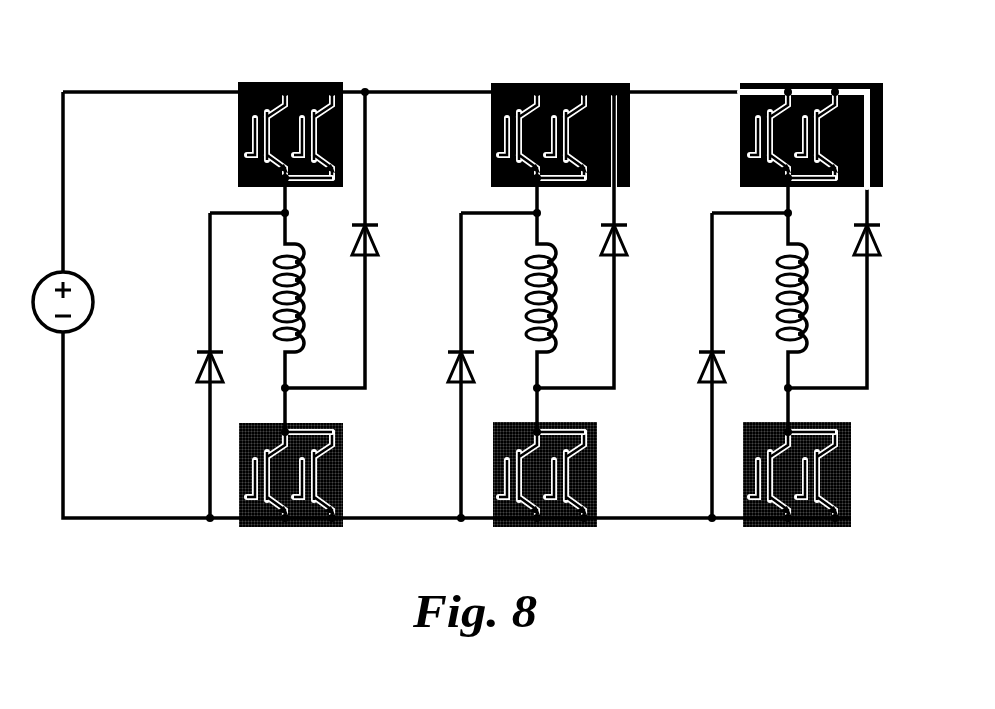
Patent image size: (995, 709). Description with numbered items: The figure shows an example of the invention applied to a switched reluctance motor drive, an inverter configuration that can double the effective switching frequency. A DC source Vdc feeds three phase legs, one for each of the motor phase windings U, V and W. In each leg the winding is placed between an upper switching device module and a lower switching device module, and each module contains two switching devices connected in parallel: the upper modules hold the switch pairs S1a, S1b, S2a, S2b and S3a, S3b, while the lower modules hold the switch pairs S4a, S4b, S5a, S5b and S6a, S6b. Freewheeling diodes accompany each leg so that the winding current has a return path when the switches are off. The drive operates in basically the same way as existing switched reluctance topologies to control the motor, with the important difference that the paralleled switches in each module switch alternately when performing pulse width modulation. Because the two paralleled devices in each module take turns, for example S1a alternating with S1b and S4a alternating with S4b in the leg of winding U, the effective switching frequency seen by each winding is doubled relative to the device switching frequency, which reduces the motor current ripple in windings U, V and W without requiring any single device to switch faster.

The DC voltage source Vdc is at (92, 302).
The upper switch, phase U, a S1a is at (266, 107).
The upper switch, phase U, b S1b is at (329, 107).
The upper switch, phase V, a S2a is at (516, 107).
The upper switch, phase V, b S2b is at (576, 107).
The upper switch, phase W, a S3a is at (764, 107).
The upper switch, phase W, b S3b is at (824, 107).
The lower switch, phase U, a S4a is at (268, 501).
The lower switch, phase U, b S4b is at (325, 501).
The lower switch, phase V, a S5a is at (516, 501).
The lower switch, phase V, b S5b is at (578, 501).
The lower switch, phase W, a S6a is at (767, 501).
The lower switch, phase W, b S6b is at (828, 501).
The phase U winding U is at (274, 300).
The phase V winding V is at (521, 300).
The phase W winding W is at (770, 300).